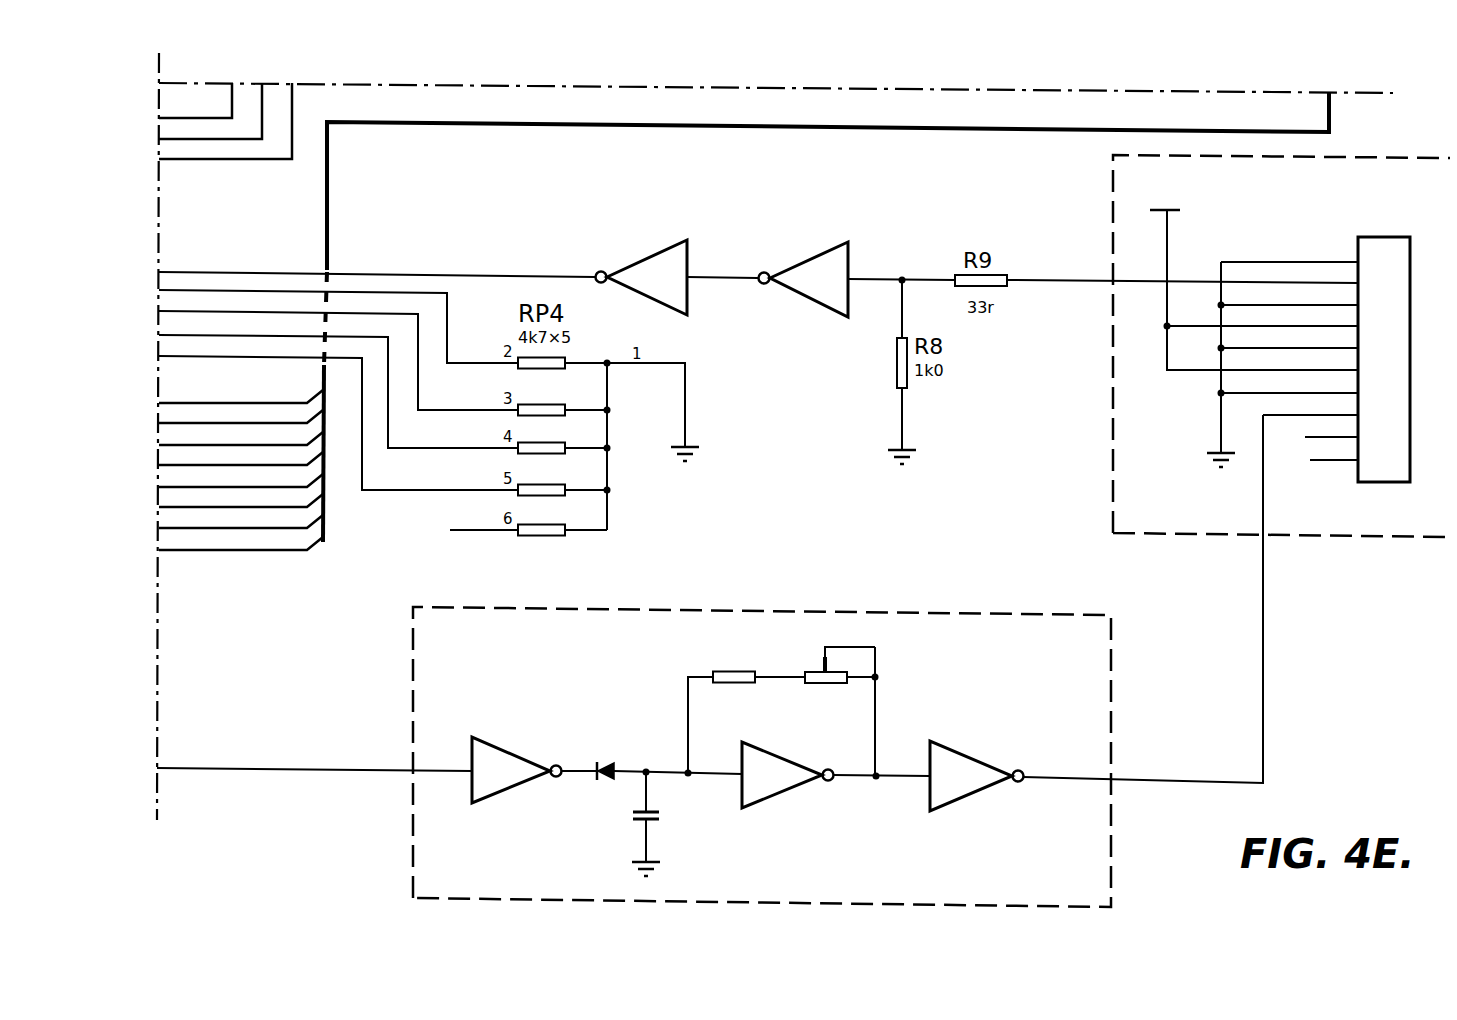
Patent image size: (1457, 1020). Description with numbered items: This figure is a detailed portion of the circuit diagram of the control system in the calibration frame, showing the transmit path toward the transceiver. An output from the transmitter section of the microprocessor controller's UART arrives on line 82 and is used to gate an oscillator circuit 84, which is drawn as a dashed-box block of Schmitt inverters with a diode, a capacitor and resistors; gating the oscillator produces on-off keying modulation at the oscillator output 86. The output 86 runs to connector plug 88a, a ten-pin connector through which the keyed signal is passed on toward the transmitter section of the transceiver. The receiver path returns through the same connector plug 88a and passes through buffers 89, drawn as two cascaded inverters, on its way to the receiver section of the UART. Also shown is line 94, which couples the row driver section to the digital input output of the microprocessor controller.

The line 94 is at (538, 126).
The buffers 89 is at (829, 291).
The connector plug 88a is at (1397, 462).
The oscillator output 86 is at (1263, 672).
The line 82 is at (238, 769).
The oscillator circuit 84 is at (463, 847).